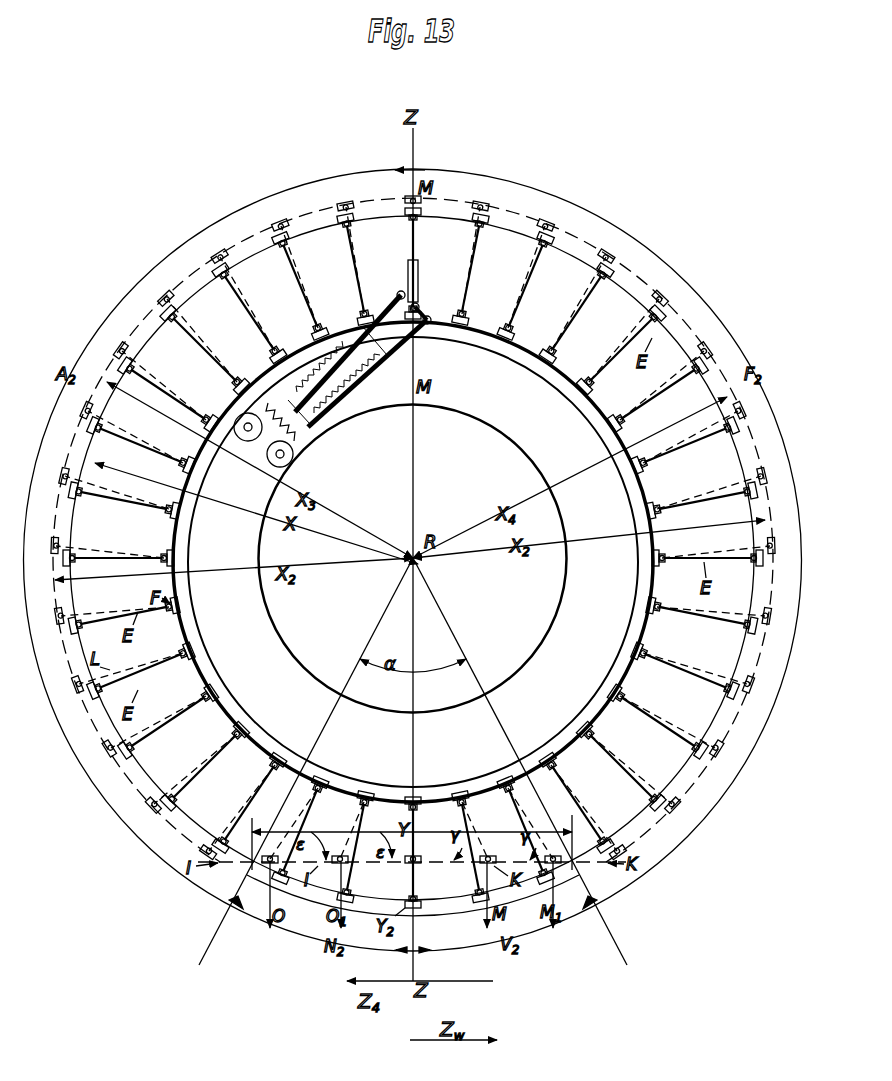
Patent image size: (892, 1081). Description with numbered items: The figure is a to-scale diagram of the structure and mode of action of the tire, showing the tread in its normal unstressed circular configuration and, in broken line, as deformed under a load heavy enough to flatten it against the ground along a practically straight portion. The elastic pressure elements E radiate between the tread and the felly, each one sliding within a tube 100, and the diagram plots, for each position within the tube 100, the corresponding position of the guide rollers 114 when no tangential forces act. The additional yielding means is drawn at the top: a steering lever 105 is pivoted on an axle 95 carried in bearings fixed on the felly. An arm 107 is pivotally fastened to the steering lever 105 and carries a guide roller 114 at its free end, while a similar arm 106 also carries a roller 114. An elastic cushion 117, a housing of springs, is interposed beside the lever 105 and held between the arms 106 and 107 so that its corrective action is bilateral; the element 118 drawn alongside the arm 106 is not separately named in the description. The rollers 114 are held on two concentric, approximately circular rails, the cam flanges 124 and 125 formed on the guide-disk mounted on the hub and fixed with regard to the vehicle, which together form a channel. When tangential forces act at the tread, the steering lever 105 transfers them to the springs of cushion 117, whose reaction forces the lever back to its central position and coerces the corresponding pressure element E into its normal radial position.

The axle 95 is at (420, 307).
The tube 100 is at (440, 244).
The steering lever 105 is at (418, 326).
The arm 106 is at (262, 412).
The arm 107 is at (397, 344).
The guide roller 114 is at (249, 436).
The elastic cushion 117 is at (330, 392).
The rack teeth 118 is at (348, 355).
The cam flange 124 is at (294, 662).
The cam flange 125 is at (196, 641).